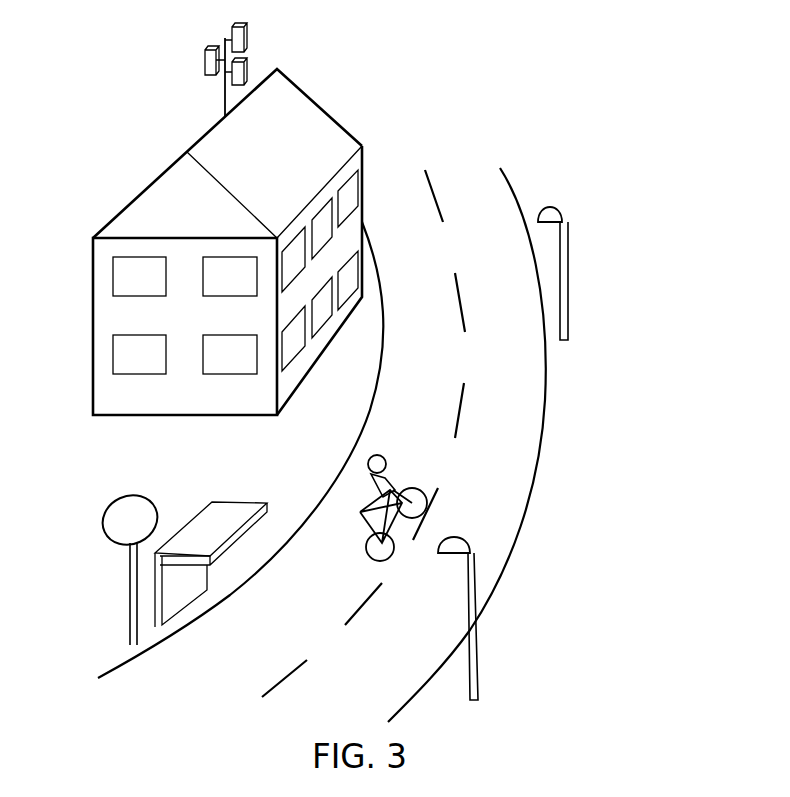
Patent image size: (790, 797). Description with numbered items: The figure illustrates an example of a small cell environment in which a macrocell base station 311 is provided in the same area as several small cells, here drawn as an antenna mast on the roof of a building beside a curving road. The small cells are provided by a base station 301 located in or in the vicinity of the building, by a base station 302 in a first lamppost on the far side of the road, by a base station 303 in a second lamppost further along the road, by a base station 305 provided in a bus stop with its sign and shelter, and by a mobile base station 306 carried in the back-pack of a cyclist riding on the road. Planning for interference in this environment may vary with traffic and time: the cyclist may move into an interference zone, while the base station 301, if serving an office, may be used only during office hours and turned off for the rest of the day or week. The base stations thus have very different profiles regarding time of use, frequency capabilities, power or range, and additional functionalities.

The base station 301 is at (364, 169).
The base station 302 is at (568, 229).
The base station 303 is at (478, 597).
The base station 305 is at (104, 527).
The mobile base station 306 is at (362, 485).
The macrocell base station 311 is at (205, 64).